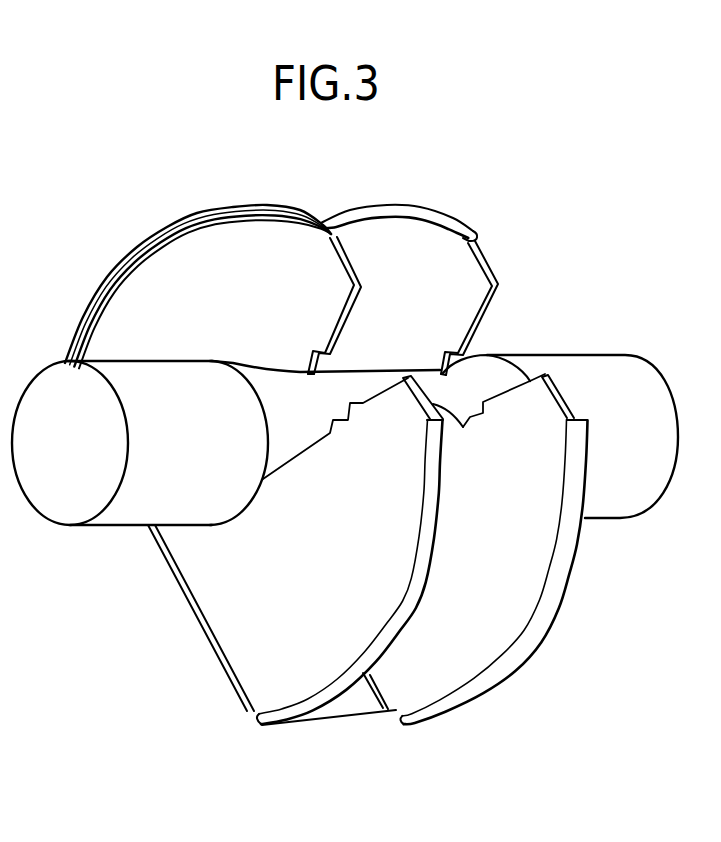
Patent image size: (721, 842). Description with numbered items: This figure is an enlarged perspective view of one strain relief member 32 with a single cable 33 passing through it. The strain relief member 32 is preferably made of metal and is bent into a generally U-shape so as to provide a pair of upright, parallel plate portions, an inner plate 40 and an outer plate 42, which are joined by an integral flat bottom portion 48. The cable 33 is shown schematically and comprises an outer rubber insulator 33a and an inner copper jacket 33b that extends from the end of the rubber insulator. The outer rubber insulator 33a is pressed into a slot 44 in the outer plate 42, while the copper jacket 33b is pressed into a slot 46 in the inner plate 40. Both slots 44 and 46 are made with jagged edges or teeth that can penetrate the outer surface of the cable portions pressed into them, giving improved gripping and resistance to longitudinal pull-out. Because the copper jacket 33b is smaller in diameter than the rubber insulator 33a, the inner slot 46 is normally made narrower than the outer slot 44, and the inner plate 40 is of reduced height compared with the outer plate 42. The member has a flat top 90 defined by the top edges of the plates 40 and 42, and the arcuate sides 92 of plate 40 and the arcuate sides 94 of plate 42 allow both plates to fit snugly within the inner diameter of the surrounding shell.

The strain relief member 32 is at (446, 166).
The cable 33 is at (606, 347).
The outer rubber insulator 33a is at (473, 380).
The inner copper jacket 33b is at (310, 413).
The plate 40 is at (199, 201).
The plate 42 is at (477, 207).
The slot 44 is at (483, 313).
The slot 46 is at (347, 327).
The bottom portion 48 is at (177, 587).
The flat top 90 is at (470, 417).
The arcuate sides 92 is at (270, 210).
The arcuate sides 94 is at (382, 210).